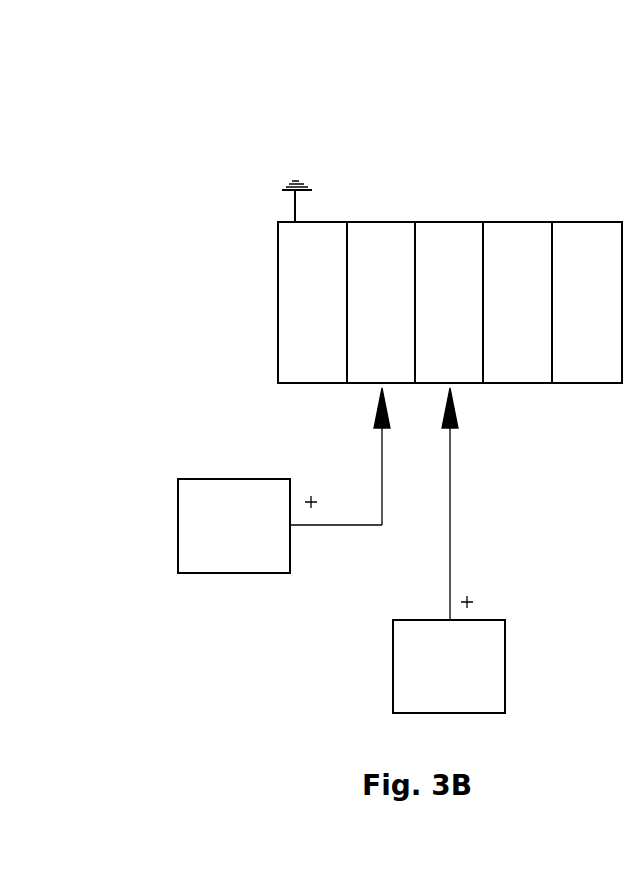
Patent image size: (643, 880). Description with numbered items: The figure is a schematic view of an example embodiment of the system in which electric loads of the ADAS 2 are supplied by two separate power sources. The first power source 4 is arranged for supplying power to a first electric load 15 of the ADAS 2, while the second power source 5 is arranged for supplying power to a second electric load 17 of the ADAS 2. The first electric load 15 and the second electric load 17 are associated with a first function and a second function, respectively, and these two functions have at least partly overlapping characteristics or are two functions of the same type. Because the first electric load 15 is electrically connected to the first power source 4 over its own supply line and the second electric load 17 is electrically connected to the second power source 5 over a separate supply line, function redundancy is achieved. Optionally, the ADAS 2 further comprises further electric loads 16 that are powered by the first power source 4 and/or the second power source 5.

The ADAS 2 is at (203, 142).
The first power source 4 is at (236, 533).
The second power source 5 is at (451, 672).
The first electric load 15 is at (380, 258).
The further electric loads 16 is at (518, 258).
The second electric load 17 is at (447, 256).